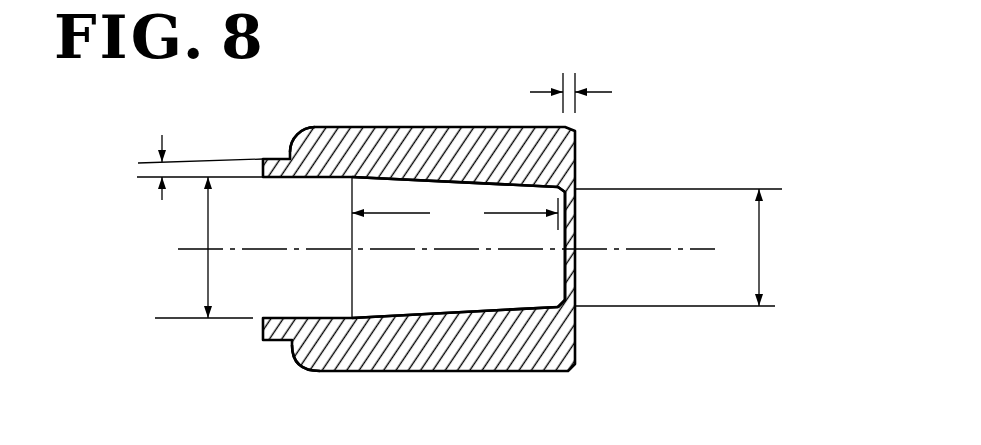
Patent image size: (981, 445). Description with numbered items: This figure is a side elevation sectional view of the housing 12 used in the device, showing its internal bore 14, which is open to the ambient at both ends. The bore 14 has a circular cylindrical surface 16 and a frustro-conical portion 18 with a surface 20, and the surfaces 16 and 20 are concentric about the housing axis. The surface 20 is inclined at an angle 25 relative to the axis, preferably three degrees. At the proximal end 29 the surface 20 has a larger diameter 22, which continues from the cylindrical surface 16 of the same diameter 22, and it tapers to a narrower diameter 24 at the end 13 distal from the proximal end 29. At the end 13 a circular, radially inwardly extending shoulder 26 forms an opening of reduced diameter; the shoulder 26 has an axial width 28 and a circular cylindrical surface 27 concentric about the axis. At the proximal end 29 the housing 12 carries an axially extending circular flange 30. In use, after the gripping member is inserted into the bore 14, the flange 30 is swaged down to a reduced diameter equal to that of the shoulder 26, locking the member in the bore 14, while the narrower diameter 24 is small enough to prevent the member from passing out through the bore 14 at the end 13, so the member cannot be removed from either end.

The housing 12 is at (398, 127).
The end 13 is at (576, 150).
The bore 14 is at (423, 291).
The circular cylindrical surface 16 is at (327, 178).
The frustro-conical portion 18 is at (455, 214).
The surface 20 is at (491, 196).
The larger diameter 22 is at (208, 278).
The narrower diameter 24 is at (699, 247).
The angle 25 is at (147, 172).
The shoulder 26 is at (576, 278).
The circular cylindrical surface 27 is at (576, 213).
The axial width 28 is at (593, 93).
The proximal end 29 is at (287, 138).
The axial extending circular flange 30 is at (278, 342).